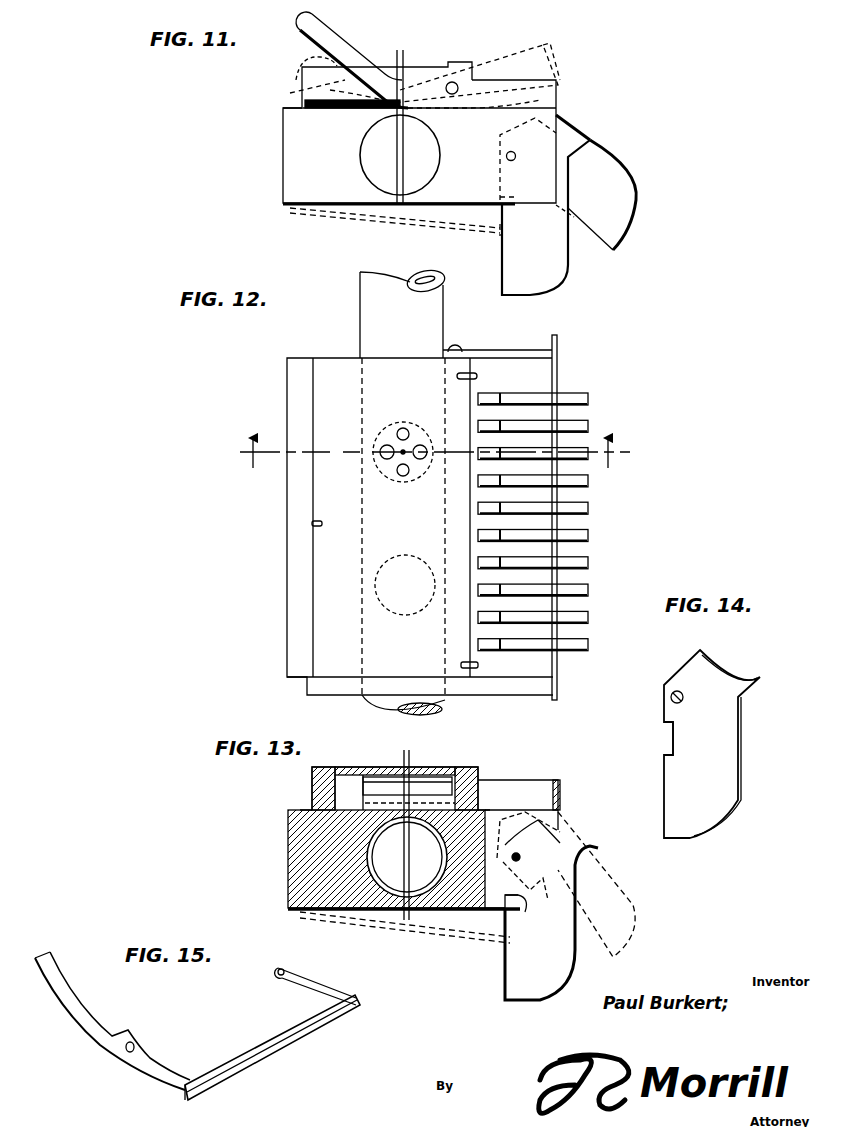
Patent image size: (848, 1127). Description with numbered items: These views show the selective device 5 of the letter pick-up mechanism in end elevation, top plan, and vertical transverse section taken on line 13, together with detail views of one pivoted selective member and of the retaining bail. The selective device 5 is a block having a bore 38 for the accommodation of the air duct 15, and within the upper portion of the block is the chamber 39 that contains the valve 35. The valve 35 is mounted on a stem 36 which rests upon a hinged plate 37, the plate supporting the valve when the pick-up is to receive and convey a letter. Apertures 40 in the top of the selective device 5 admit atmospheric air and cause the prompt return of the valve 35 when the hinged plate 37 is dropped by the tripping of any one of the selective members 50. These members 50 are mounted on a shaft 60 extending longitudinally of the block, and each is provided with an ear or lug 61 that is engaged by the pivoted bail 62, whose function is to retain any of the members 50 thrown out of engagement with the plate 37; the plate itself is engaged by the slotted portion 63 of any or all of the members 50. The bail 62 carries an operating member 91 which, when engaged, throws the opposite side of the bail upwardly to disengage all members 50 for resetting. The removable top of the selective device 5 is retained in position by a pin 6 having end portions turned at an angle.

In FIG. 11, the selective device 5 is at (292, 133).
In FIG. 12, the selective device 5 is at (330, 500).
In FIG. 13, the selective device 5 is at (302, 825).
In FIG. 11, the pin 6 is at (302, 93).
In FIG. 12, the pin 6 is at (482, 700).
In FIG. 13, the pin 6 is at (312, 792).
In FIG. 12, the section line 13 is at (428, 453).
In FIG. 12, the air duct 15 is at (362, 315).
In FIG. 13, the valve 35 is at (432, 783).
In FIG. 11, the stem 36 is at (403, 52).
In FIG. 13, the stem 36 is at (420, 827).
In FIG. 11, the hinged plate 37 is at (476, 229).
In FIG. 13, the hinged plate 37 is at (476, 930).
In FIG. 11, the bore 38 is at (430, 158).
In FIG. 13, the bore 38 is at (368, 872).
In FIG. 13, the chamber 39 is at (347, 783).
In FIG. 12, the apertures 40 is at (402, 426).
In FIG. 11, the selective member 50 is at (628, 224).
In FIG. 12, the selective member 50 is at (589, 398).
In FIG. 13, the selective member 50 is at (640, 912).
In FIG. 14, the selective member 50 is at (738, 763).
In FIG. 11, the shaft 60 is at (514, 160).
In FIG. 13, the shaft 60 is at (520, 855).
In FIG. 11, the ear or lug 61 is at (575, 138).
In FIG. 11, the bail 62 is at (548, 62).
In FIG. 12, the bail 62 is at (510, 355).
In FIG. 13, the bail 62 is at (562, 793).
In FIG. 15, the bail 62 is at (318, 1030).
In FIG. 13, the slotted portion 63 is at (529, 919).
In FIG. 14, the slotted portion 63 is at (673, 736).
In FIG. 11, the operating member 91 is at (418, 55).
In FIG. 15, the operating member 91 is at (40, 958).